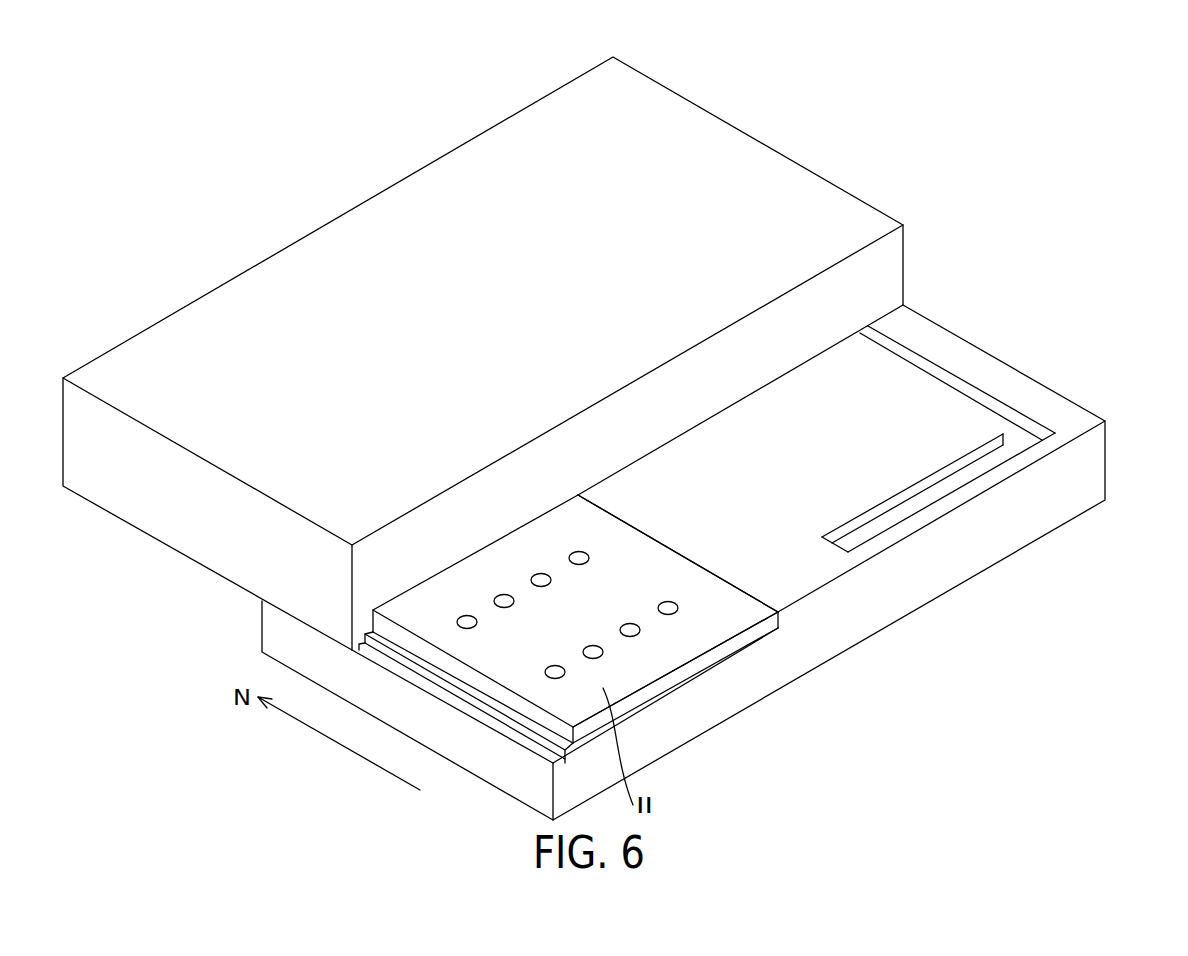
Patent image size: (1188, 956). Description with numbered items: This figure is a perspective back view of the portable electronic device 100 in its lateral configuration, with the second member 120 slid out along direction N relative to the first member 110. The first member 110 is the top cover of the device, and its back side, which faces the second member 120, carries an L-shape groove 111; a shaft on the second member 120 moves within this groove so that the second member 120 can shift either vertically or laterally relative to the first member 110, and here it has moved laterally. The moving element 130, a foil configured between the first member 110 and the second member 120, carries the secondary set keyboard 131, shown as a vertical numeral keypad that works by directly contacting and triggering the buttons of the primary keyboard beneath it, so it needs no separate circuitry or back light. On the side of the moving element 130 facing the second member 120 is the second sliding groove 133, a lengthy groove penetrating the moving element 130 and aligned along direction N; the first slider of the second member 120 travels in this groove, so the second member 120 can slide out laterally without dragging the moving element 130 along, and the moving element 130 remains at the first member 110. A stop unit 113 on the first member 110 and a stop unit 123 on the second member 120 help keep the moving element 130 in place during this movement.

The portable electronic device 100 is at (1043, 124).
The first member 110 is at (1018, 366).
The L-shape groove 111 is at (937, 492).
The stop unit 113 is at (779, 612).
The second member 120 is at (783, 152).
The stop unit 123 is at (365, 635).
The moving element 130 is at (517, 678).
The secondary set keyboard 131 is at (637, 636).
The second sliding groove 133 is at (733, 606).